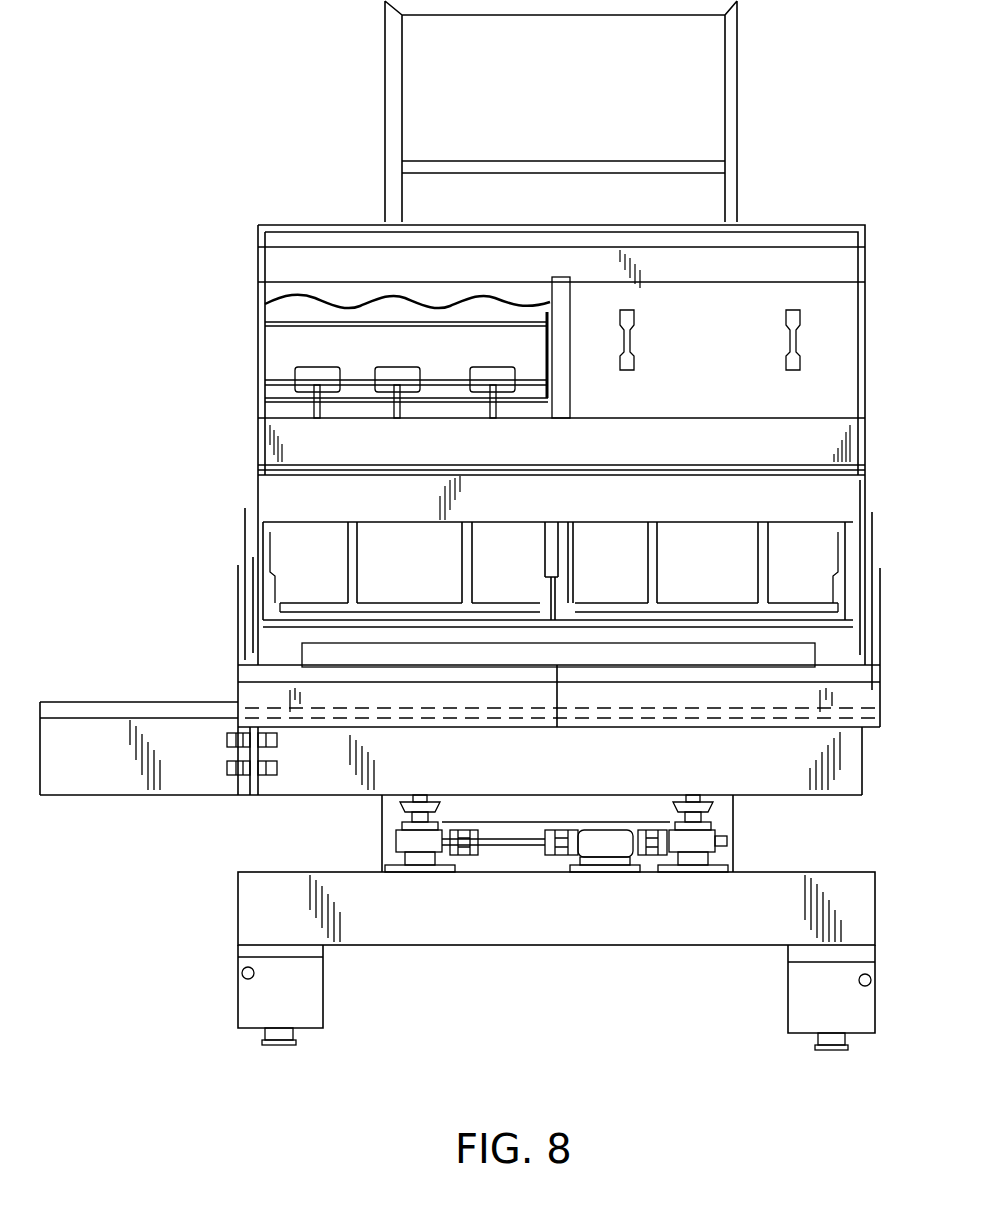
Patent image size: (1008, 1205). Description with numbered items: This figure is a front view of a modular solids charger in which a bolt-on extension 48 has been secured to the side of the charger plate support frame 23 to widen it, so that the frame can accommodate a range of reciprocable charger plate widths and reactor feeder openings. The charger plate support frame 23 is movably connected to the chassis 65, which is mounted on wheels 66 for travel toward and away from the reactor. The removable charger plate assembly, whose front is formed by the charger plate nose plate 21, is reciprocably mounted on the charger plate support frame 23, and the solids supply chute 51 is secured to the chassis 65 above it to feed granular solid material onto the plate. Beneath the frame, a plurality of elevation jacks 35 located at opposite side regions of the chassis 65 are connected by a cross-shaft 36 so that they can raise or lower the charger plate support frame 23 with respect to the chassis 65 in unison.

The charger plate nose plate 21 is at (255, 697).
The charger plate support frame 23 is at (265, 795).
The elevation jack 35 is at (407, 842).
The cross-shaft 36 is at (507, 843).
The bolt-on extension 48 is at (105, 782).
The solids supply chute 51 is at (817, 230).
The chassis 65 is at (852, 890).
The wheels 66 is at (295, 1036).